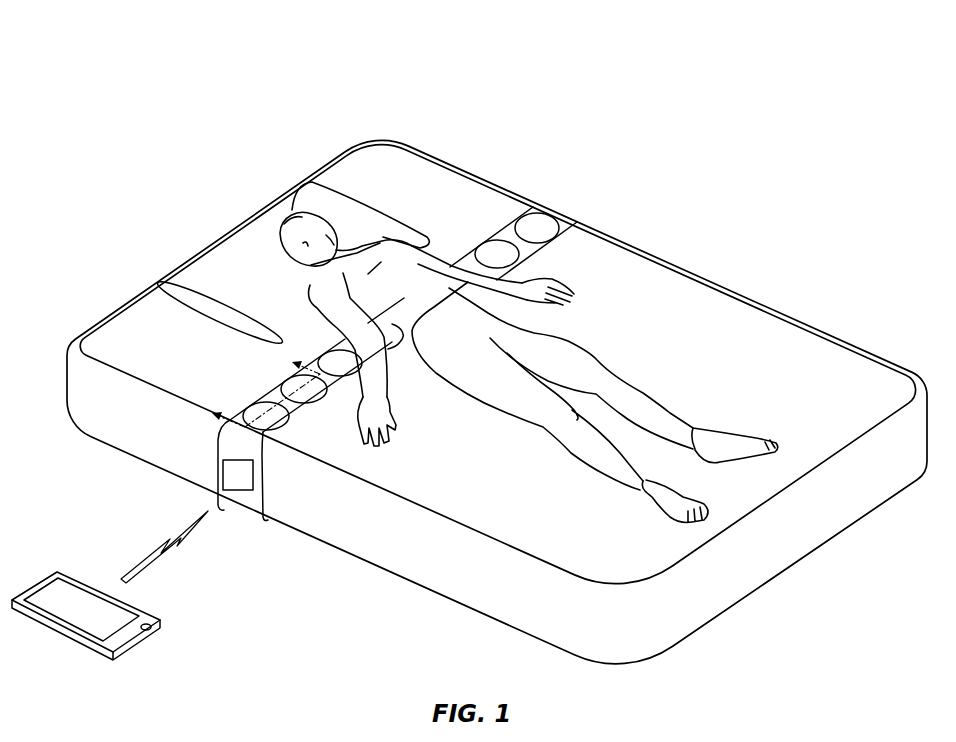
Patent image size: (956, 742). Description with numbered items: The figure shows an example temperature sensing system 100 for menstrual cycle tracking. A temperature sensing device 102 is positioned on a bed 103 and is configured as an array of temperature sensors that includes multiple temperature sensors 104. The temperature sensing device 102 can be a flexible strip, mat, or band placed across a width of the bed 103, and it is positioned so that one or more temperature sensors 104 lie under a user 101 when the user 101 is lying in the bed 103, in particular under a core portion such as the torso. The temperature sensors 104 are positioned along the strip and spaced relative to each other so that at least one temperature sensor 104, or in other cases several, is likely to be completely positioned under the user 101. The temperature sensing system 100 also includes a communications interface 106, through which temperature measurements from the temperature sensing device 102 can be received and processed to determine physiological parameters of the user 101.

The temperature sensing system 100 is at (117, 67).
The user 101 is at (294, 210).
The temperature sensing device 102 is at (497, 226).
The bed 103 is at (777, 313).
The temperature sensors 104 is at (553, 214).
The communications interface 106 is at (254, 476).